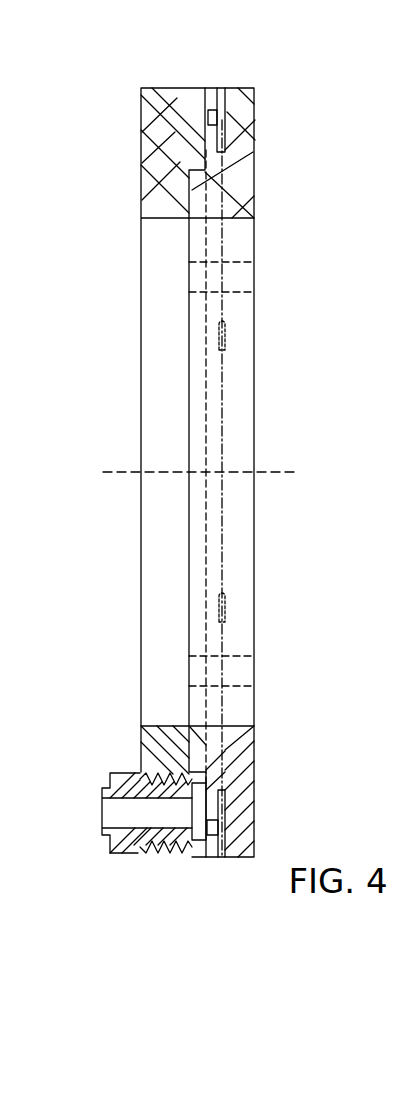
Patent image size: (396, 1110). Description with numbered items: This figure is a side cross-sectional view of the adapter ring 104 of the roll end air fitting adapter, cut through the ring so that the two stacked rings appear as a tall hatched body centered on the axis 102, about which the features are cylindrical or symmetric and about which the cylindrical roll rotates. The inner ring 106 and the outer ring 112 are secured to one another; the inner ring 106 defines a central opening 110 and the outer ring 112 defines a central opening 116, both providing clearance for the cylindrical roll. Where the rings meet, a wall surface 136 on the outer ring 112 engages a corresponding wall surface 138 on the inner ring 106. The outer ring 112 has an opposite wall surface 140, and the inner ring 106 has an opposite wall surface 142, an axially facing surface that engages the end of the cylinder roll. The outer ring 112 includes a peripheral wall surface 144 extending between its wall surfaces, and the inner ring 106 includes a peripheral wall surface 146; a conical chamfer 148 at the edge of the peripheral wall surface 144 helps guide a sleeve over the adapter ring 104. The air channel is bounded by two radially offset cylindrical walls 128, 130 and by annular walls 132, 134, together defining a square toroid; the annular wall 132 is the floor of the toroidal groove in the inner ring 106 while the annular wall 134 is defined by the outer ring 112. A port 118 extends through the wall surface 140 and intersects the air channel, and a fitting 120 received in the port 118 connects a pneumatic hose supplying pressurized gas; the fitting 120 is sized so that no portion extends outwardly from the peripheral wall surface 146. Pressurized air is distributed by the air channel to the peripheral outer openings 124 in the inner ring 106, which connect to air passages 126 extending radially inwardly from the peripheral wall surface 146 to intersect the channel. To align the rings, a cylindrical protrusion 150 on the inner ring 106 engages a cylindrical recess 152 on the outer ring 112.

The axis 102 is at (272, 472).
The adapter ring 104 is at (322, 670).
The inner ring 106 is at (242, 185).
The central opening 110 is at (232, 218).
The outer ring 112 is at (141, 203).
The central opening 116 is at (168, 218).
The port 118 is at (157, 782).
The fitting 120 is at (128, 855).
The peripheral outer openings 124 is at (226, 88).
The air passages 126 is at (228, 118).
The cylindrical wall 128 is at (209, 110).
The cylindrical wall 130 is at (218, 88).
The annular wall 132 is at (220, 127).
The annular wall 134 is at (205, 115).
The wall surface 136 is at (192, 167).
The wall surface 138 is at (226, 158).
The wall surface 140 is at (141, 110).
The wall surface 142 is at (240, 125).
The peripheral wall surface 144 is at (158, 88).
The peripheral wall surface 146 is at (242, 88).
The conical chamfer 148 is at (141, 98).
The cylindrical protrusion 150 is at (197, 218).
The cylindrical recess 152 is at (175, 183).